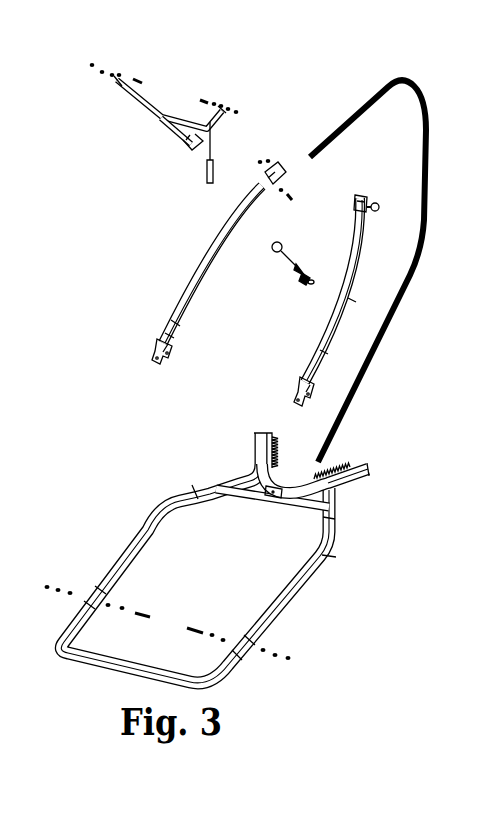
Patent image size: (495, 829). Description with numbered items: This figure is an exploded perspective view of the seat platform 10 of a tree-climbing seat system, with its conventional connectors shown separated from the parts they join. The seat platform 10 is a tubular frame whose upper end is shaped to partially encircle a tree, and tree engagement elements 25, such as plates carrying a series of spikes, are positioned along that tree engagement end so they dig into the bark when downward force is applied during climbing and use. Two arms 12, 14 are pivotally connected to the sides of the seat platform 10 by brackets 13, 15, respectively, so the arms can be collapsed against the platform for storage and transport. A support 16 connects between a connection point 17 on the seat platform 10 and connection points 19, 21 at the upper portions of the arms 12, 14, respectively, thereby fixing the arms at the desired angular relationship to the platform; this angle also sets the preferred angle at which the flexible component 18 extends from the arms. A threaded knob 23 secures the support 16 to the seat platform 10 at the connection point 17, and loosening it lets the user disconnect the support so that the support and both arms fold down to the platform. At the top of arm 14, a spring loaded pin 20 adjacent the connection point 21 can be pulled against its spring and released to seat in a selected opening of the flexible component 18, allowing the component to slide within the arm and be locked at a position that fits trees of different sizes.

The seat platform 10 is at (160, 492).
The arm 12 is at (178, 274).
The bracket 13 is at (176, 342).
The arm 14 is at (310, 331).
The bracket 15 is at (297, 381).
The support 16 is at (166, 152).
The connection point 17 is at (268, 499).
The flexible component 18 is at (428, 228).
The connection point 19 is at (275, 183).
The spring loaded pin 20 is at (378, 205).
The connection point 21 is at (366, 217).
The threaded knob 23 is at (300, 277).
The tree engagement elements 25 is at (276, 452).